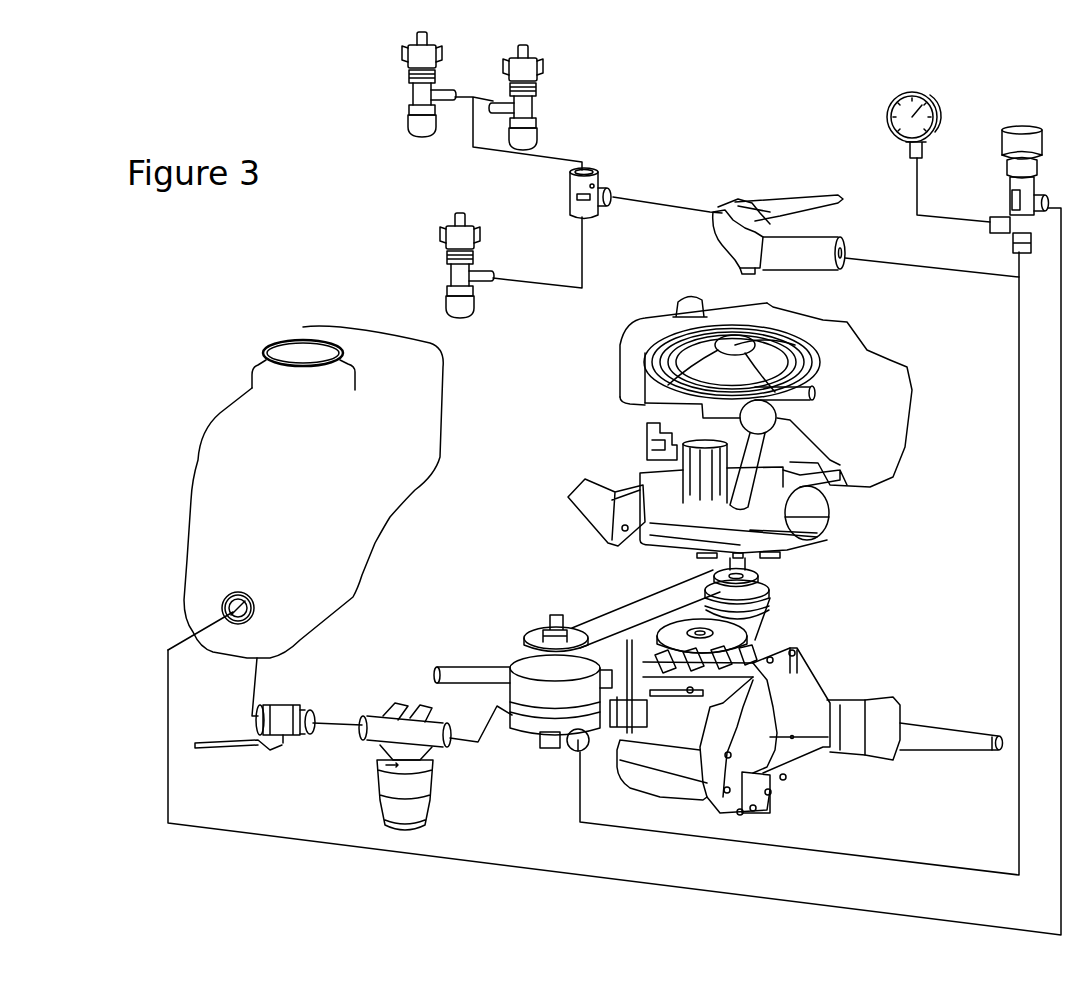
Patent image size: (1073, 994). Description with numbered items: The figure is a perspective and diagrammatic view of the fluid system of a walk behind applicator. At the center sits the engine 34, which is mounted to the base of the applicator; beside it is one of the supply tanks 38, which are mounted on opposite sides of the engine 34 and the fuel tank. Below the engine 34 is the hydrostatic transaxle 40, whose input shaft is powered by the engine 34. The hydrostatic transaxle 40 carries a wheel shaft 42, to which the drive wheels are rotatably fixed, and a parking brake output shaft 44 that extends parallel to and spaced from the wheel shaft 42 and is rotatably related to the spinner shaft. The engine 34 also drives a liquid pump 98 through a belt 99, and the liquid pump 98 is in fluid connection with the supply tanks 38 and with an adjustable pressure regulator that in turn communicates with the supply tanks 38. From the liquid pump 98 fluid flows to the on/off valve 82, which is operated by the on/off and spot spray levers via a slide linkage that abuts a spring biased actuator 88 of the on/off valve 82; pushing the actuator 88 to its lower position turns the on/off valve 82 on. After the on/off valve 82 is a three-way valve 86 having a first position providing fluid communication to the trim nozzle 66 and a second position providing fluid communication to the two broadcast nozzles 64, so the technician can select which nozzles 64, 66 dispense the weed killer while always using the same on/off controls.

The engine 34 is at (890, 410).
The supply tanks 38 is at (417, 406).
The hydrostatic transaxle 40 is at (755, 705).
The wheel shaft 42 is at (957, 737).
The parking brake output shaft 44 is at (777, 780).
The broadcast nozzles 64 is at (518, 55).
The trim nozzle 66 is at (477, 230).
The on/off valve 82 is at (740, 213).
The 3-way valve 86 is at (610, 182).
The spring biased actuator 88 is at (795, 205).
The liquid pump 98 is at (525, 665).
The belt 99 is at (622, 605).